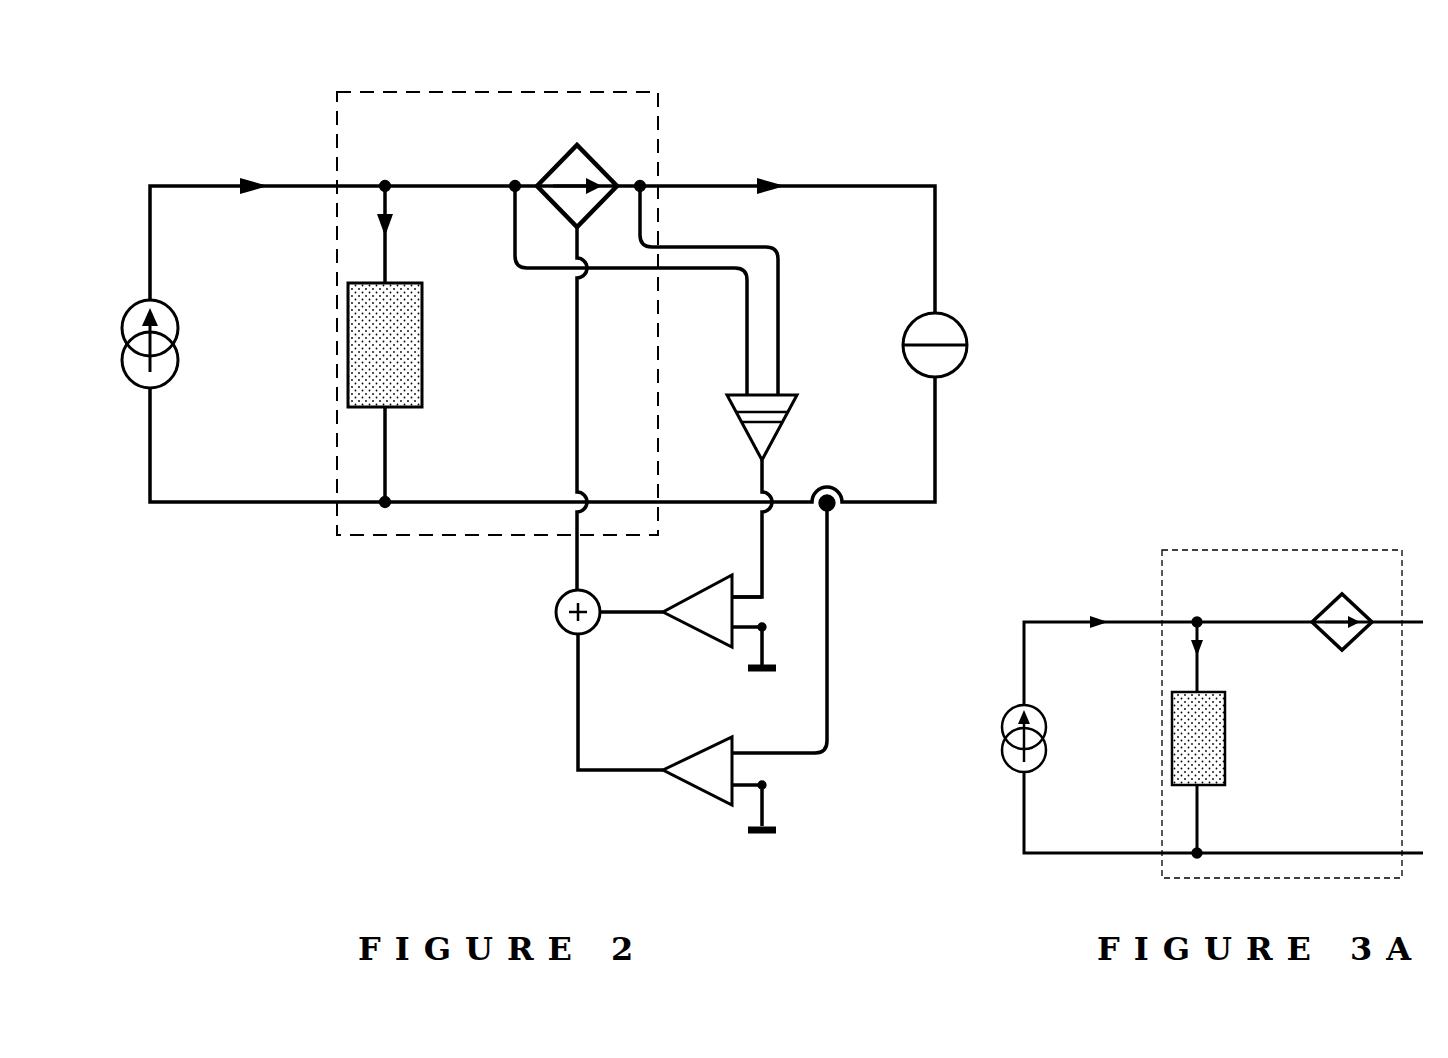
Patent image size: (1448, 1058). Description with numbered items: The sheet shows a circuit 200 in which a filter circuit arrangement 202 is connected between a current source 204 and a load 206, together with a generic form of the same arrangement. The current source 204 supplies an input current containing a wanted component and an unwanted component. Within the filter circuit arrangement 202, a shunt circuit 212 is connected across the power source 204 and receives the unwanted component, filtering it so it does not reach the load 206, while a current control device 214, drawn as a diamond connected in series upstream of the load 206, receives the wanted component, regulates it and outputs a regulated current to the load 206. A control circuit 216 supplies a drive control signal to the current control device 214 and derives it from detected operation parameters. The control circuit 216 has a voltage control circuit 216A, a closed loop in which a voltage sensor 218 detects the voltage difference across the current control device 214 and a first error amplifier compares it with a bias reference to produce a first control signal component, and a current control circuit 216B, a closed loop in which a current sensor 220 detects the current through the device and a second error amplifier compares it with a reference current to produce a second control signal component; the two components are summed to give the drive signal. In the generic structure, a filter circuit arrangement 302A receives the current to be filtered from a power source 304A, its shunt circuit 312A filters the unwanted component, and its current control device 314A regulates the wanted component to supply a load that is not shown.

In FIG. 2, the circuit 200 is at (900, 106).
In FIG. 2, the filter circuit arrangement 202 is at (462, 92).
In FIG. 2, the current source 204 is at (123, 378).
In FIG. 2, the load 206 is at (960, 366).
In FIG. 2, the shunt circuit 212 is at (428, 345).
In FIG. 2, the current control device 214 is at (556, 152).
In FIG. 2, the control circuit 216 is at (528, 616).
In FIG. 2, the voltage control circuit 216A is at (808, 330).
In FIG. 2, the current control circuit 216B is at (856, 653).
In FIG. 2, the voltage sensor 218 is at (790, 412).
In FIG. 2, the current sensor 220 is at (835, 512).
In FIG. 3A, the filter circuit arrangement 302A is at (1243, 550).
In FIG. 3A, the power source 304A is at (1005, 768).
In FIG. 3A, the shunt circuit 312A is at (1230, 730).
In FIG. 3A, the current control device 314A is at (1352, 642).